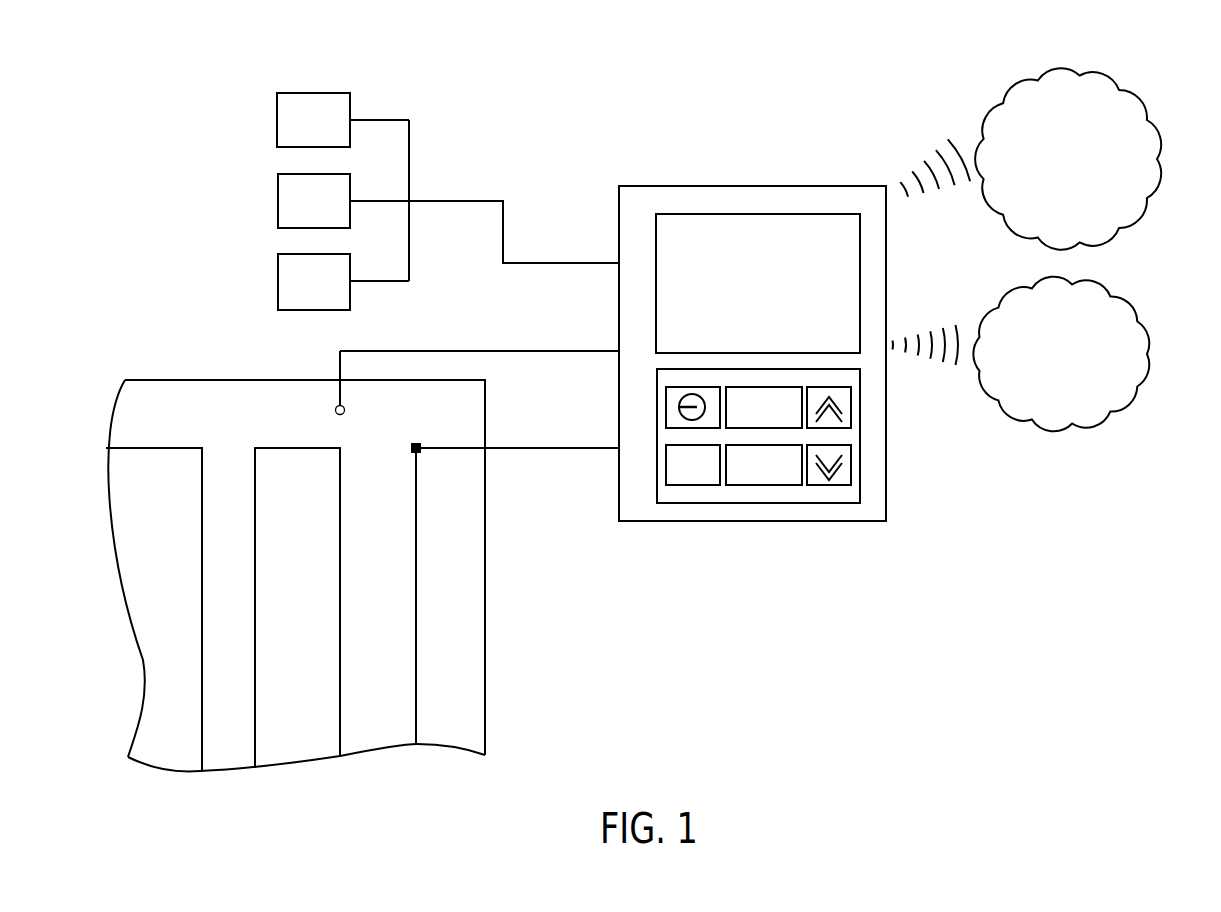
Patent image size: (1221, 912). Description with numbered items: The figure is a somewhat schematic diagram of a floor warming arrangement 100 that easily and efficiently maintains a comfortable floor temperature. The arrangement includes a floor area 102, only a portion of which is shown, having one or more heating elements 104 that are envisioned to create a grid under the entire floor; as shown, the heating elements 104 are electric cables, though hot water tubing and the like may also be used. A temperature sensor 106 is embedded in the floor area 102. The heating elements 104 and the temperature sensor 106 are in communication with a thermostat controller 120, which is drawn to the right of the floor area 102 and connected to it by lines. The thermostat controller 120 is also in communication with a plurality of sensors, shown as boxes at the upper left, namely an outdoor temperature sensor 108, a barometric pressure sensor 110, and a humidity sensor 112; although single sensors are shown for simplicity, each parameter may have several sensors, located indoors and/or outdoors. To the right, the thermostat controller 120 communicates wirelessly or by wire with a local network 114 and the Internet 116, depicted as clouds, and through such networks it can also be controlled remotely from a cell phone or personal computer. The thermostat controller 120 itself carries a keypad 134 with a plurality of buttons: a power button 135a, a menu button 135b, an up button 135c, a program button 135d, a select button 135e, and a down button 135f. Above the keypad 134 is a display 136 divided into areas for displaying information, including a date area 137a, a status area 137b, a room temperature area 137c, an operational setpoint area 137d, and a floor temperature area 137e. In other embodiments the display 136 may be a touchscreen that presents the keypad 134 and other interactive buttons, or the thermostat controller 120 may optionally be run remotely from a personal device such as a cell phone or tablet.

The floor warming arrangement 100 is at (570, 82).
The floor area 102 is at (472, 686).
The heating elements 104 is at (202, 605).
The temperature sensor 106 is at (334, 410).
The outdoor temperature sensor 108 is at (277, 121).
The barometric pressure sensor 110 is at (278, 201).
The humidity sensor 112 is at (278, 281).
The local network 114 is at (1135, 352).
The Internet 116 is at (1128, 112).
The thermostat controller 120 is at (780, 522).
The keypad 134 is at (830, 495).
The power button 135a is at (672, 418).
The menu button 135b is at (768, 387).
The up button 135c is at (846, 398).
The program button 135d is at (676, 480).
The select button 135e is at (738, 480).
The down button 135f is at (846, 474).
The display 136 is at (848, 296).
The date area 137a is at (688, 208).
The status area 137b is at (825, 208).
The room temperature area 137c is at (690, 283).
The operational setpoint area 137d is at (775, 208).
The floor temperature area 137e is at (870, 330).